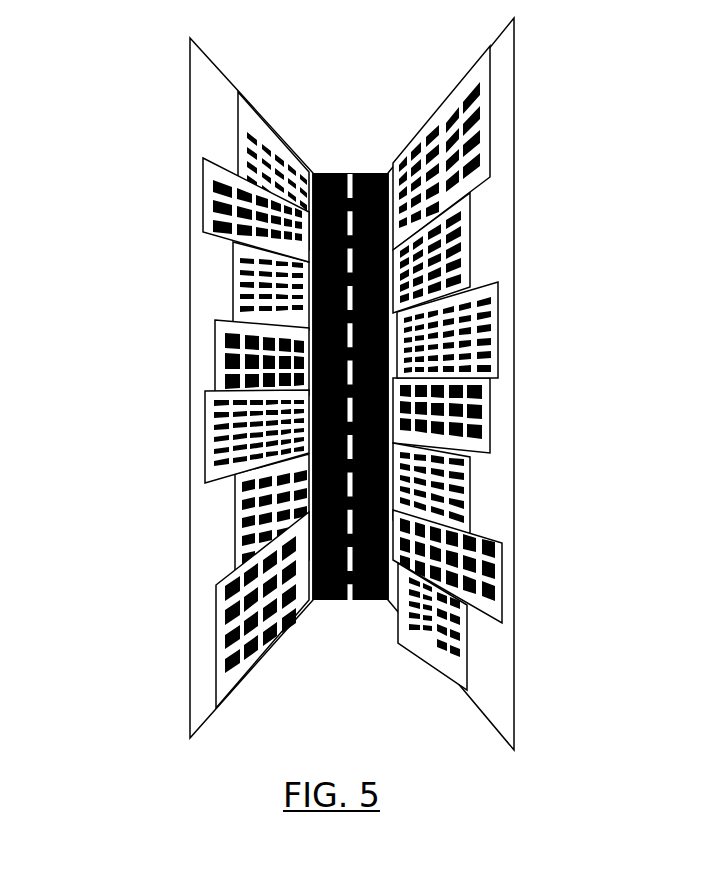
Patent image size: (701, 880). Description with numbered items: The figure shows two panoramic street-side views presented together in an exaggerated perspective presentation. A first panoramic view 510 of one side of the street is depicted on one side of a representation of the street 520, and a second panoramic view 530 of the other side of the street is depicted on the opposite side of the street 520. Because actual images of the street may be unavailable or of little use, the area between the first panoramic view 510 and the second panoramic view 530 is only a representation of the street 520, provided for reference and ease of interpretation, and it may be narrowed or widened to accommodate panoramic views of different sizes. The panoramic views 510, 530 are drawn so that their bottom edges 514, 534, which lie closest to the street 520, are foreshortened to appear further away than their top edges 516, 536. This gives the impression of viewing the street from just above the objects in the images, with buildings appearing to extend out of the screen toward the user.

The first panoramic view 510 is at (202, 278).
The bottom edge of the first panoramic view 514 is at (315, 508).
The top edge of the first panoramic view 516 is at (188, 532).
The representation of the street 520 is at (366, 197).
The second panoramic view 530 is at (493, 193).
The bottom edge of the second panoramic view 534 is at (392, 500).
The top edge of the second panoramic view 536 is at (515, 525).